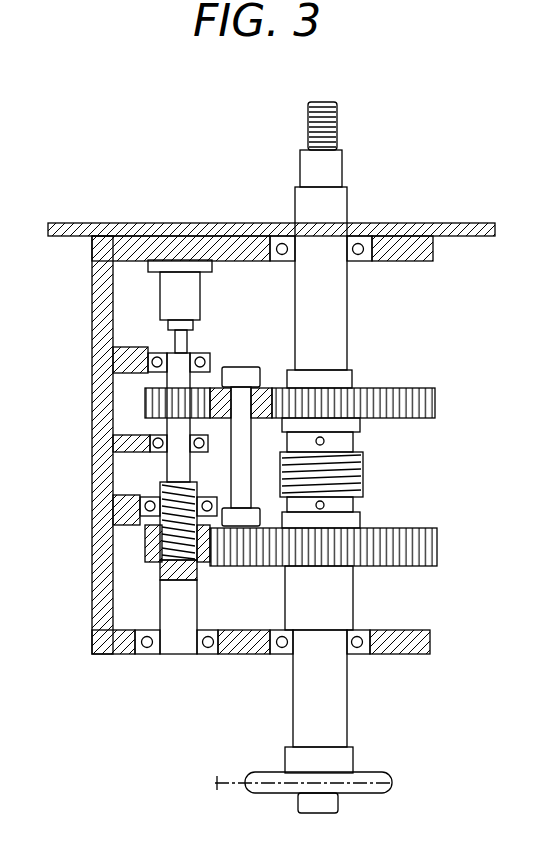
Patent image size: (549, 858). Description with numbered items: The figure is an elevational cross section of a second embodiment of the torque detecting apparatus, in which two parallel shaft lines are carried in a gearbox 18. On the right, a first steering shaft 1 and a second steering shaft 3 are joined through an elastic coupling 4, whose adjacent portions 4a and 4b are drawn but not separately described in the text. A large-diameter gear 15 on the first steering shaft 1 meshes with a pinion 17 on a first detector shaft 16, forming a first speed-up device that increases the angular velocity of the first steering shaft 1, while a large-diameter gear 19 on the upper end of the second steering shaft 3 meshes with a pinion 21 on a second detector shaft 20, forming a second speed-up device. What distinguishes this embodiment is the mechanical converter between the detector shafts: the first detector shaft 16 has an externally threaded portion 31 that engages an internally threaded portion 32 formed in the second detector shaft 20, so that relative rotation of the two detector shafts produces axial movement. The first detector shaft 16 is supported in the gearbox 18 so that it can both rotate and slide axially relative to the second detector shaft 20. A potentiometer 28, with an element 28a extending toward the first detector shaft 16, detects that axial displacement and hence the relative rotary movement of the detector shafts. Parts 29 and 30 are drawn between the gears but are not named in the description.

The first steering shaft 1 is at (333, 198).
The second steering shaft 3 is at (338, 727).
The elastic coupling 4 is at (368, 473).
The upper hub of worm wheel 4a is at (360, 460).
The lower hub of worm wheel 4b is at (343, 505).
The large-diameter gear 15 is at (433, 392).
The first detector shaft 16 is at (172, 466).
The pinion 17 is at (148, 403).
The gearbox 18 is at (98, 283).
The large-diameter gear 19 is at (425, 543).
The second detector shaft 20 is at (175, 598).
The pinion 21 is at (145, 535).
The potentiometer 28 is at (168, 305).
The actuator stem 28a is at (178, 340).
The bolt head 29 is at (255, 372).
The bolt 30 is at (233, 397).
The externally threaded portion 31 is at (175, 482).
The internally threaded portion 32 is at (148, 552).